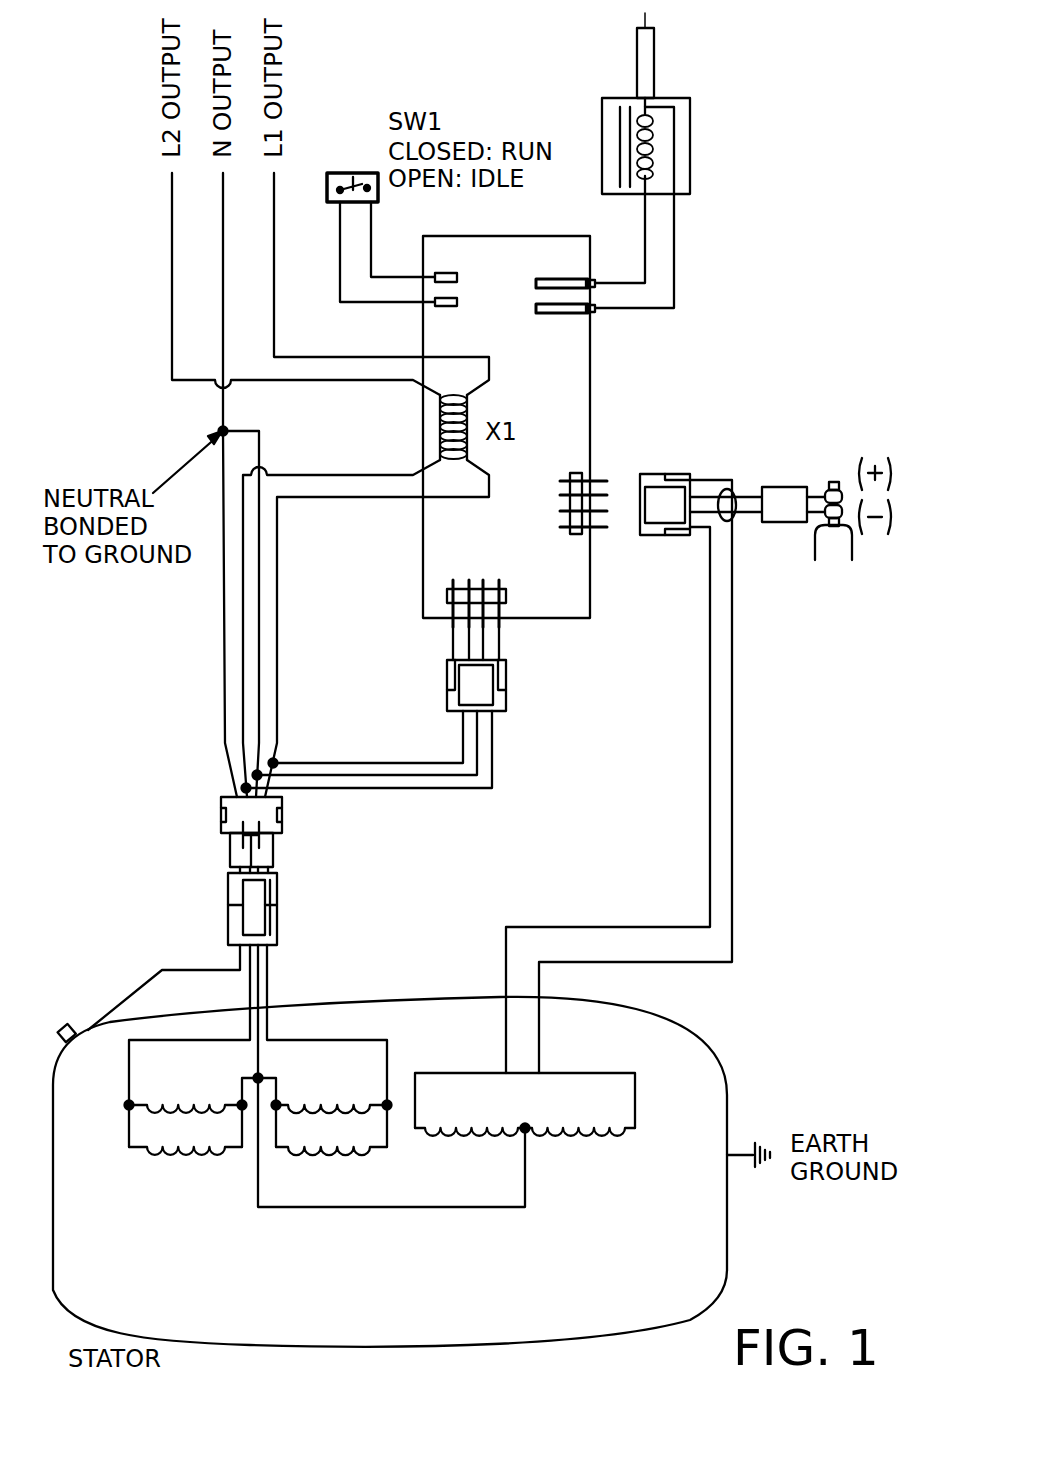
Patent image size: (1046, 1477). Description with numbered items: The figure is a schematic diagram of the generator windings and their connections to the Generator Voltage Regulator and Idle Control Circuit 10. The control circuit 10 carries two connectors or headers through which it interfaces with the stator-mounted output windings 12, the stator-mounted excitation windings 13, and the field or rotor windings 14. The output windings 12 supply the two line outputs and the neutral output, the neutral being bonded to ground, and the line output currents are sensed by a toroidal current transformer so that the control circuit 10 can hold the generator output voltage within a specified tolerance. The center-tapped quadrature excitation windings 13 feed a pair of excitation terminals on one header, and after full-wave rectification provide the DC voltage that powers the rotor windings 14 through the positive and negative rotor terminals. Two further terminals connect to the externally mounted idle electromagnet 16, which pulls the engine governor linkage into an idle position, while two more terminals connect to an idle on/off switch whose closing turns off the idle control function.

The control circuit 10 is at (590, 420).
The output windings 12 is at (235, 1287).
The excitation windings 13 is at (636, 1315).
The rotor windings 14 is at (839, 593).
The electromagnet 16 is at (690, 183).